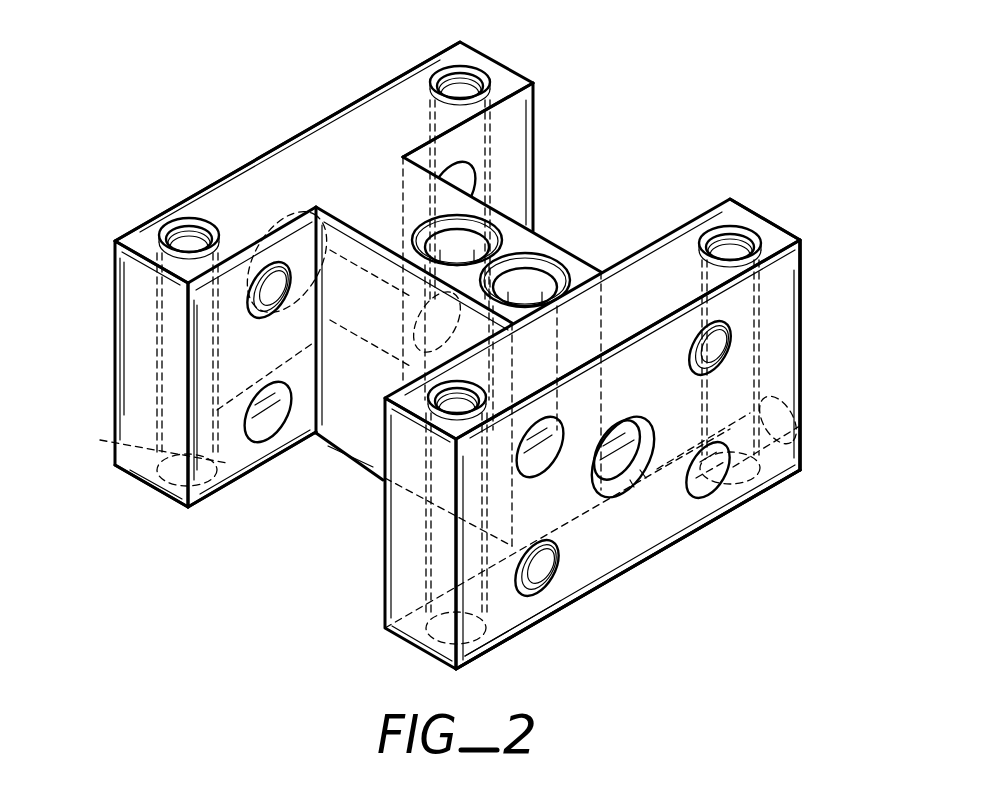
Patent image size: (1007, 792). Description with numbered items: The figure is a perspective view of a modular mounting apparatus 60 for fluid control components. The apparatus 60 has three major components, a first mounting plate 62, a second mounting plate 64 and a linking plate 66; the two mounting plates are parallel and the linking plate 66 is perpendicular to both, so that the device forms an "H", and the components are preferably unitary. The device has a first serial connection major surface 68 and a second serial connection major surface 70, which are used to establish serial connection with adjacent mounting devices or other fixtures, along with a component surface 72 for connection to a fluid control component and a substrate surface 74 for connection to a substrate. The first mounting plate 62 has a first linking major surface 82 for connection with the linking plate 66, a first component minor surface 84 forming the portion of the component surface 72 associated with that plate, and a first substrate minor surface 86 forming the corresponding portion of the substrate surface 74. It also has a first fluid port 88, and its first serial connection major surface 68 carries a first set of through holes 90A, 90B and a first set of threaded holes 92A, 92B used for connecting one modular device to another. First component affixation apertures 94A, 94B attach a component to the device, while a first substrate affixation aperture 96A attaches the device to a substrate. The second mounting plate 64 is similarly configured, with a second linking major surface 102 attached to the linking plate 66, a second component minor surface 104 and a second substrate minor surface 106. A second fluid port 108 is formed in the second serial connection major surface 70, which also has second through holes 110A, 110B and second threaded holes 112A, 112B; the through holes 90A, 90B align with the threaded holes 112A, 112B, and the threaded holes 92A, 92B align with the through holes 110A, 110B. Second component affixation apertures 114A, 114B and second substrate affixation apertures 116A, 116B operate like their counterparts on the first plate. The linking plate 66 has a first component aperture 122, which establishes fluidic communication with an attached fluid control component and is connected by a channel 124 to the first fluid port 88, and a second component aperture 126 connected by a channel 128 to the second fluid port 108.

The modular mounting apparatus 60 is at (290, 562).
The first mounting plate 62 is at (122, 482).
The second mounting plate 64 is at (398, 640).
The linking plate 66 is at (520, 243).
The first serial connection major surface 68 is at (114, 277).
The second serial connection major surface 70 is at (790, 313).
The component surface 72 is at (288, 158).
The substrate surface 74 is at (715, 532).
The first linking major surface 82 is at (225, 455).
The first component minor surface 84 is at (396, 80).
The first substrate minor surface 86 is at (168, 504).
The first fluid port 88 is at (273, 223).
The first through hole 90A is at (272, 418).
The first through hole 90B is at (433, 157).
The first threaded hole 92A is at (273, 318).
The first threaded hole 92B is at (428, 341).
The first component affixation aperture 94A is at (130, 341).
The first component affixation aperture 94B is at (465, 86).
The first substrate affixation aperture 96A is at (122, 424).
The second linking major surface 102 is at (680, 237).
The second component minor surface 104 is at (735, 213).
The second substrate minor surface 106 is at (776, 487).
The second fluid port 108 is at (630, 495).
The second through hole 110A is at (537, 460).
The second through hole 110B is at (615, 478).
The second threaded hole 112A is at (550, 577).
The second threaded hole 112B is at (684, 353).
The second component affixation aperture 114A is at (457, 393).
The second component affixation aperture 114B is at (757, 240).
The second substrate affixation aperture 116A is at (512, 633).
The second substrate affixation aperture 116B is at (797, 438).
The first component aperture 122 is at (460, 237).
The channel 124 is at (375, 275).
The second component aperture 126 is at (530, 290).
The channel 128 is at (545, 340).